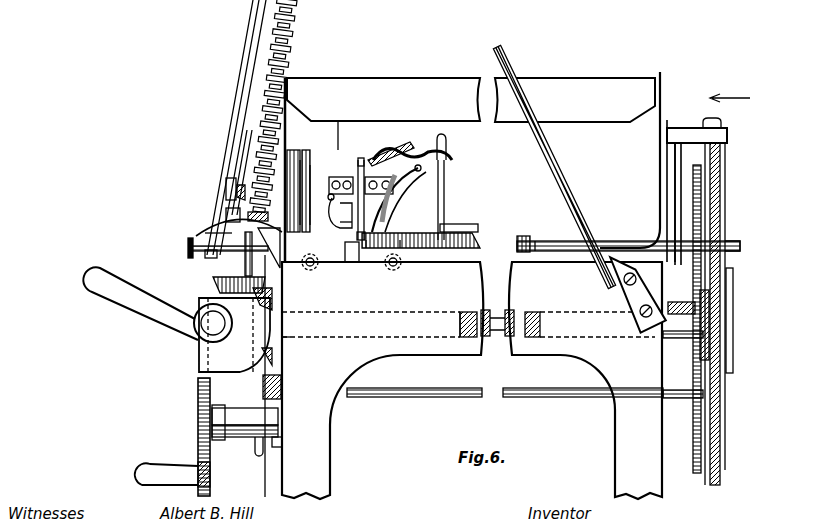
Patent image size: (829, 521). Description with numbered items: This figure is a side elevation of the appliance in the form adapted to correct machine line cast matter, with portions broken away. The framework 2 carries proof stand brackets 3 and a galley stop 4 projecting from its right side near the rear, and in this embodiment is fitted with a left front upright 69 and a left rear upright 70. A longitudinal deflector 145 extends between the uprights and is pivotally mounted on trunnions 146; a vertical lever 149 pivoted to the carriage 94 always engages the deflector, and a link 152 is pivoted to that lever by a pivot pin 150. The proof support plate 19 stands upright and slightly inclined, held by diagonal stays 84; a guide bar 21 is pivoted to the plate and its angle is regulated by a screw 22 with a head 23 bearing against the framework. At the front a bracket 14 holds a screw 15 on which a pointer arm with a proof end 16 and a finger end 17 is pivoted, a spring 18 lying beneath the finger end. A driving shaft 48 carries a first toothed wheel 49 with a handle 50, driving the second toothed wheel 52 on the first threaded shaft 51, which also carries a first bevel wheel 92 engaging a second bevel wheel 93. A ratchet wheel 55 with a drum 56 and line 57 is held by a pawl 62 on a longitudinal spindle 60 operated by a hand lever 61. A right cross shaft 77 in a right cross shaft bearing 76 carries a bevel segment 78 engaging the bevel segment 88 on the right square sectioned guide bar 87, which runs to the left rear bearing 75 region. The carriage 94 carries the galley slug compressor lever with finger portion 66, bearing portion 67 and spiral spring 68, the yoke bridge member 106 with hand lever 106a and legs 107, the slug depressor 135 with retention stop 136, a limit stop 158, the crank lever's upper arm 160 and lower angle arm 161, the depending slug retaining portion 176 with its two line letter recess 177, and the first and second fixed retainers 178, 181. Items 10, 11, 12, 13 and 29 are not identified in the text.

The framework 2 is at (472, 380).
The proof stand brackets 3 is at (232, 222).
The galley stop 4 is at (567, 240).
The pivot 10 is at (347, 276).
The bar 11 is at (540, 250).
The block 12 is at (348, 248).
The bar end 13 is at (737, 235).
The bracket 14 is at (236, 188).
The screw 15 is at (232, 233).
The proof end 16 is at (226, 198).
The finger end 17 is at (226, 190).
The spring 18 is at (232, 168).
The plate 19 is at (130, 300).
The guide bar 21 is at (242, 92).
The screw 22 is at (246, 262).
The head 23 is at (188, 252).
The pin 29 is at (540, 240).
The driving shaft 48 is at (242, 436).
The first toothed wheel 49 is at (198, 420).
The handle 50 is at (165, 480).
The first threaded shaft 51 is at (509, 338).
The second toothed wheel 52 is at (206, 312).
The ratchet wheel 55 is at (690, 483).
The flanged boss or drum 56 is at (734, 283).
The line or cord 57 is at (722, 418).
The longitudinal spindle 60 is at (520, 397).
The hand lever 61 is at (259, 453).
The pawl 62 is at (700, 338).
The finger portion 66 is at (455, 158).
The bearing portion 67 is at (412, 212).
The spiral spring 68 is at (438, 138).
The left front upright 69 is at (266, 130).
The left rear upright 70 is at (660, 172).
The left rear bearing 75 is at (676, 302).
The right cross shaft bearing 76 is at (268, 372).
The right cross shaft 77 is at (210, 323).
The right first bevel segment 78 is at (234, 335).
The diagonal stays 84 is at (520, 72).
The right square sectioned guide bar 87 is at (310, 331).
The right first bevel segment 88 is at (310, 350).
The first bevel wheel 92 is at (267, 286).
The second bevel wheel 93 is at (216, 284).
The carriage 94 is at (307, 195).
The bridge member 106 is at (480, 230).
The hand lever 106a is at (446, 176).
The legs 107 is at (418, 232).
The slug depressor 135 is at (365, 162).
The retention stop 136 is at (362, 242).
The longitudinal deflector 145 is at (471, 100).
The trunnions 146 is at (656, 76).
The vertical lever 149 is at (340, 122).
The pivot pin 150 is at (338, 152).
The link 152 is at (304, 175).
The limit stop 158 is at (343, 178).
The upper arm 160 is at (312, 191).
The lower angle arm 161 is at (334, 213).
The depending slug retaining portion 176 is at (402, 241).
The two line letter recess 177 is at (368, 242).
The first fixed slug retainer 178 is at (380, 204).
The second fixed retainer 181 is at (340, 226).